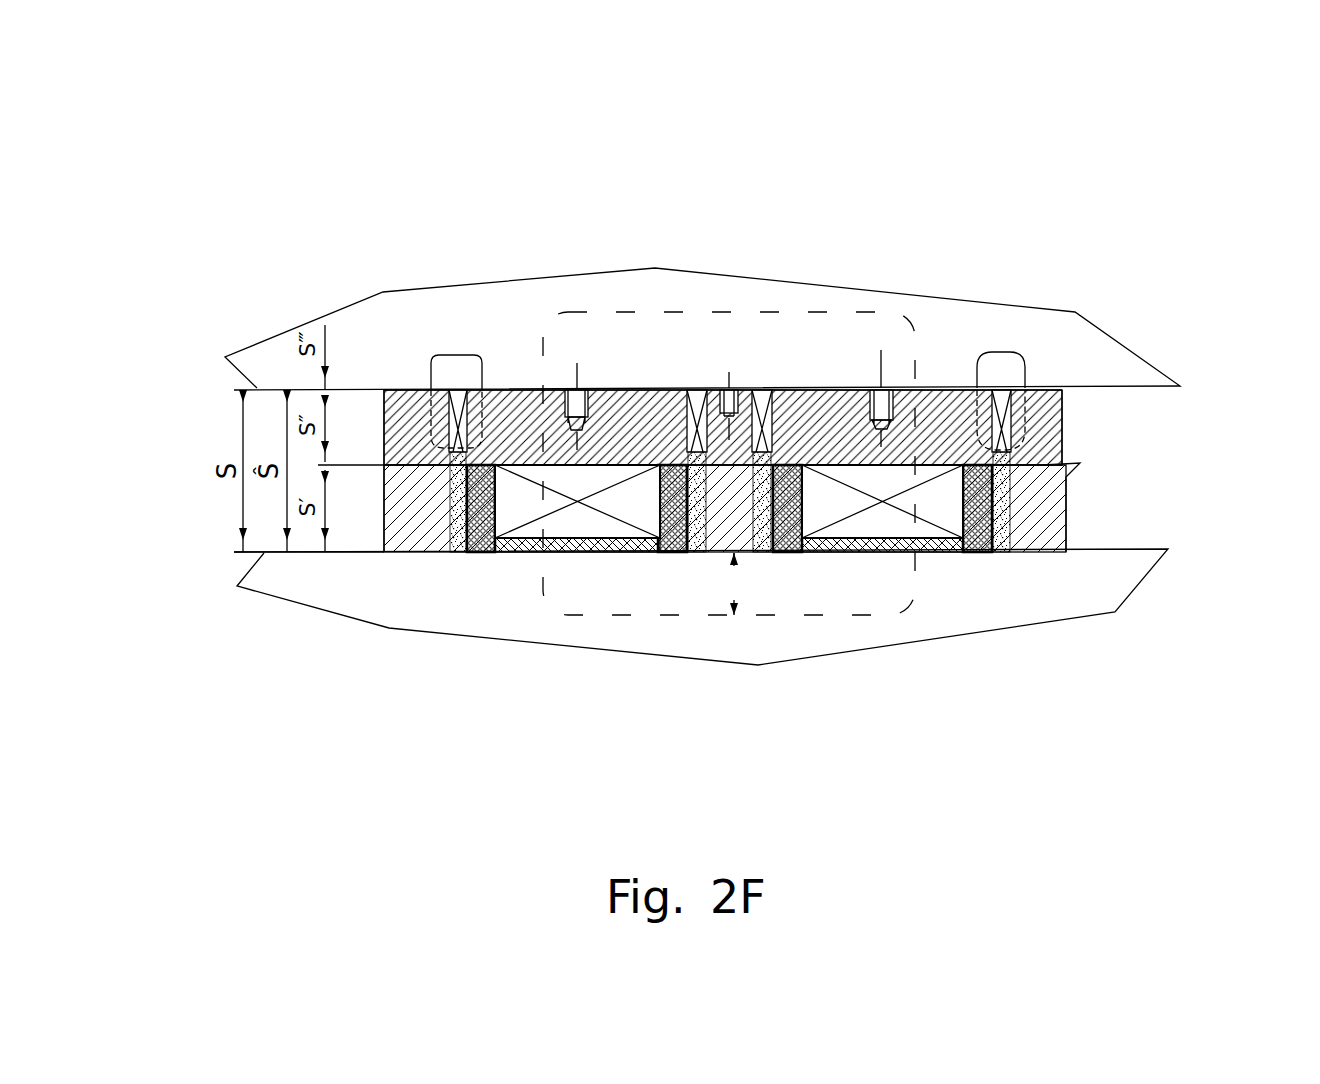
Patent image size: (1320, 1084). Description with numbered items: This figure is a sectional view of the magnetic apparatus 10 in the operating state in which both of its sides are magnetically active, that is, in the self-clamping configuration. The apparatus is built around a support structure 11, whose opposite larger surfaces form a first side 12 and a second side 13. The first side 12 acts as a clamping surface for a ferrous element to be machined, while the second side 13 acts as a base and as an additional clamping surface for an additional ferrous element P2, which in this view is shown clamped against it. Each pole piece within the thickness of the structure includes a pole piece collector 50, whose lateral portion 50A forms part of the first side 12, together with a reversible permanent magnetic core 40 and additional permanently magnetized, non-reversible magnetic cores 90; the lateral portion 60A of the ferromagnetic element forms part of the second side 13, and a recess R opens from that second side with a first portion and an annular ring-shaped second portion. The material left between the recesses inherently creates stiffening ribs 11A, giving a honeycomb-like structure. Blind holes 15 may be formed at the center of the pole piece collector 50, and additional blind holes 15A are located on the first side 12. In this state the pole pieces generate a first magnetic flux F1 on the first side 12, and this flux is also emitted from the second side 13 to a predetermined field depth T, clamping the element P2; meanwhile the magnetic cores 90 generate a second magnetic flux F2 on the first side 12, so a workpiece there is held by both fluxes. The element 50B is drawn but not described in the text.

The magnetic apparatus 10 is at (1205, 296).
The support structure 11 is at (1042, 528).
The stiffening ribs 11A is at (742, 518).
The first side 12 is at (383, 352).
The second side 13 is at (424, 576).
The blind holes 15 is at (577, 363).
The additional blind holes 15A is at (737, 367).
The magnetic core 40 is at (537, 518).
The pole piece collector 50 is at (508, 415).
The lateral portion of the pole piece collector 50A is at (653, 388).
The mesh element 50B is at (985, 551).
The lateral portion of the ferromagnetic element 60A is at (599, 545).
The additional magnetic cores 90 is at (460, 412).
The first magnetic flux F1 is at (888, 312).
The second magnetic flux F2 is at (437, 355).
The additional ferrous element P2 is at (274, 336).
The recess R is at (913, 549).
The field depth T is at (734, 581).